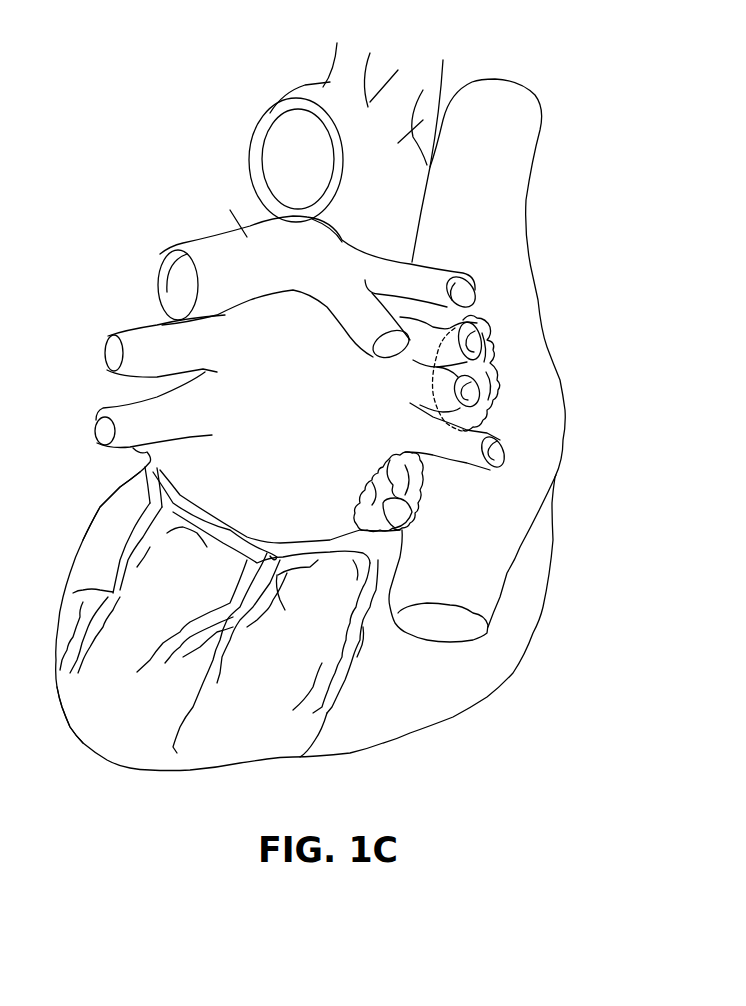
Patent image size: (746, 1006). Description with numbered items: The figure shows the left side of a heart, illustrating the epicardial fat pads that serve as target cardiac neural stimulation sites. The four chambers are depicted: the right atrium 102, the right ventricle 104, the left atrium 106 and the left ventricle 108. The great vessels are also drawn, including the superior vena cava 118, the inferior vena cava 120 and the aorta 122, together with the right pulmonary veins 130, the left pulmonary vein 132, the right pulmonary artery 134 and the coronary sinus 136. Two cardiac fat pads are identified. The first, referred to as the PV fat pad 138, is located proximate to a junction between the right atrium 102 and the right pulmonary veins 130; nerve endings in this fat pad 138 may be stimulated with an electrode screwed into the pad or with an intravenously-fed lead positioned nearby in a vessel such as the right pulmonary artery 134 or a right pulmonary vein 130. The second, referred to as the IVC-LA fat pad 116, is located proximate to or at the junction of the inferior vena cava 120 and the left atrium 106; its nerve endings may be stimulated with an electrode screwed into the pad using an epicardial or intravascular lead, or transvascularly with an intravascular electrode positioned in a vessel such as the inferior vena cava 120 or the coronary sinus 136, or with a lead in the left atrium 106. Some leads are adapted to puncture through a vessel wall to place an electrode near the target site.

The right atrium 102 is at (517, 317).
The right ventricle 104 is at (405, 725).
The left atrium 106 is at (153, 497).
The left ventricle 108 is at (87, 712).
The cardiac fat pad (IVC-LA fat pad) 116 is at (423, 495).
The superior vena cava 118 is at (513, 135).
The inferior vena cava 120 is at (483, 600).
The aorta 122 is at (347, 136).
The right pulmonary veins 130 is at (437, 350).
The left pulmonary vein 132 is at (103, 355).
The right pulmonary artery 134 is at (247, 233).
The coronary sinus 136 is at (222, 531).
The cardiac fat pad (PV fat pad) 138 is at (497, 385).